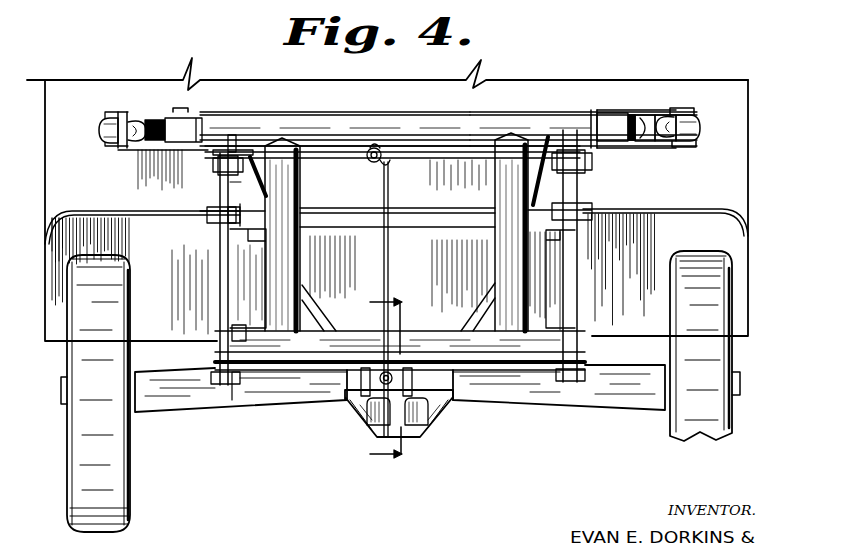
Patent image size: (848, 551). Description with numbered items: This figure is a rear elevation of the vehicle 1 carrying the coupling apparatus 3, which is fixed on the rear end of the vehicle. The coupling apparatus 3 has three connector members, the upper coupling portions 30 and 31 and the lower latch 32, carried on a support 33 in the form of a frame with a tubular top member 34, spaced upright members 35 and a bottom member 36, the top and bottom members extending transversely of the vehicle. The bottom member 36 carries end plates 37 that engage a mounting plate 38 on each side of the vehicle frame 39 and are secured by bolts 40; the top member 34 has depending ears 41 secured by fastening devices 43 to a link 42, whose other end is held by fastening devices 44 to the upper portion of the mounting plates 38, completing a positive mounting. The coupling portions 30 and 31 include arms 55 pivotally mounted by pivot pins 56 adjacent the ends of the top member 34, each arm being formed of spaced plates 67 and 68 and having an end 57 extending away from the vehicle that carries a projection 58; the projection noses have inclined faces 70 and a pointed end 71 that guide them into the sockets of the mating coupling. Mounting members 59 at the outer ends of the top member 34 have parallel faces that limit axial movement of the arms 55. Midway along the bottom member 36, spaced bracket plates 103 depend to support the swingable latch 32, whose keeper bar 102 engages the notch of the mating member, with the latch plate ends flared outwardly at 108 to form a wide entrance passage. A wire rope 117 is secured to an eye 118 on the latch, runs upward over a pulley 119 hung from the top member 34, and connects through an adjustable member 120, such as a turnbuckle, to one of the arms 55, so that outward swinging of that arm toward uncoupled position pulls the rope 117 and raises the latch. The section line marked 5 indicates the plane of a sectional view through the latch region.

The vehicle 1 is at (754, 96).
The coupling apparatus 3 is at (636, 103).
The coupling portion 30 is at (138, 139).
The coupling portion 31 is at (668, 133).
The latch 32 is at (368, 425).
The support 33 is at (421, 118).
The top member 34 is at (531, 117).
The upright members 35 is at (297, 202).
The bottom member 36 is at (350, 342).
The end plates 37 is at (230, 398).
The mounting plate 38 is at (213, 279).
The frame 39 is at (224, 296).
The bolts 40 is at (205, 388).
The depending ears 41 is at (232, 176).
The link 42 is at (208, 217).
The fastening devices 43 is at (214, 168).
The fastening devices 44 is at (212, 225).
The arms 55 is at (127, 113).
The pivot pins 56 is at (183, 112).
The end 57 is at (100, 115).
The projections 58 is at (100, 132).
The mounting members 59 is at (173, 127).
The plate 67 is at (682, 108).
The plate 68 is at (697, 149).
The inclined faces 70 is at (675, 137).
The pointed end 71 is at (655, 125).
The keeper bar 102 is at (414, 388).
The bracket plates 103 is at (353, 379).
The flared end portions 108 is at (440, 415).
The wire rope 117 is at (388, 197).
The eye 118 is at (366, 407).
The pulley 119 is at (383, 168).
The adjustable member 120 is at (245, 147).
The section line 5 is at (404, 383).